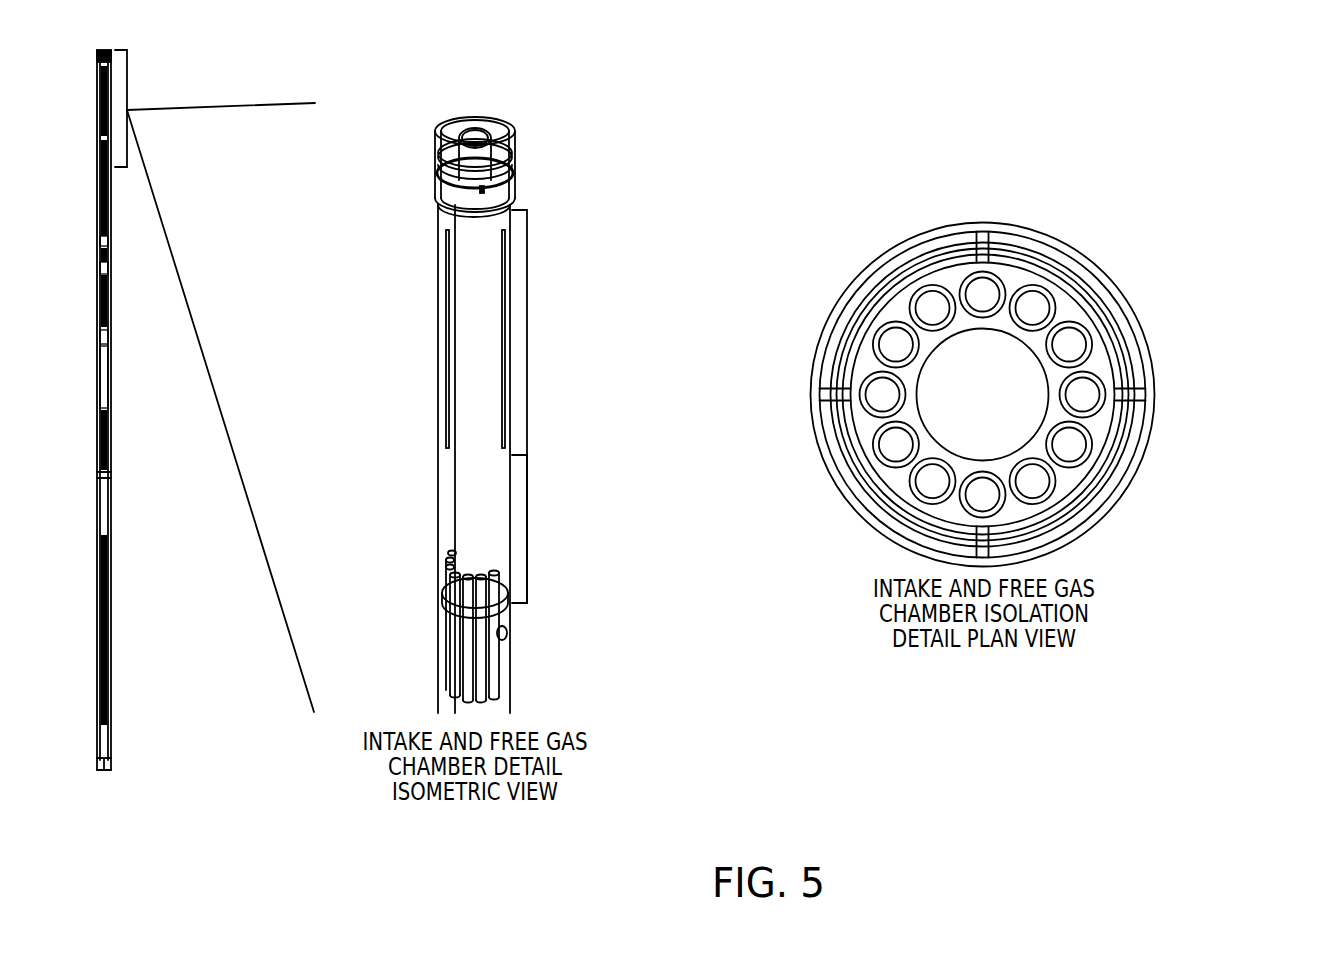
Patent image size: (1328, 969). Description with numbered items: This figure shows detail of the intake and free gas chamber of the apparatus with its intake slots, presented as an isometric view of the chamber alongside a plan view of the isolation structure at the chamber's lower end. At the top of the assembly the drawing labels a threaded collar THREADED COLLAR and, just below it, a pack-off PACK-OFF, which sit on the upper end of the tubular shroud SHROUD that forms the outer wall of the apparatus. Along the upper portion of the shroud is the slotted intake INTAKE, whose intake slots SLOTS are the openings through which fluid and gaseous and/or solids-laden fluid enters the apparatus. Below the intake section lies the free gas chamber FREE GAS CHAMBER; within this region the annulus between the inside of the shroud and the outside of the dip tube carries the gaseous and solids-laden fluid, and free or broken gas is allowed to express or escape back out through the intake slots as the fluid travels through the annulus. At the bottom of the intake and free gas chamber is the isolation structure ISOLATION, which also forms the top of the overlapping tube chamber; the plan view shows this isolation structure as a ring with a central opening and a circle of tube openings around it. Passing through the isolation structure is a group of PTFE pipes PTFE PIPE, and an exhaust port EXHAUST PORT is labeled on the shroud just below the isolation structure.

The threaded collar THREADED COLLAR is at (518, 125).
The pack-off PACK-OFF is at (518, 186).
The shroud SHROUD is at (513, 267).
The intake INTAKE is at (556, 406).
The intake slots SLOTS is at (510, 350).
The free gas chamber FREE GAS CHAMBER is at (581, 529).
The PTFE pipe (typ. 7) PTFE PIPE is at (448, 552).
The isolation structure ISOLATION is at (512, 590).
The exhaust port EXHAUST PORT is at (512, 633).